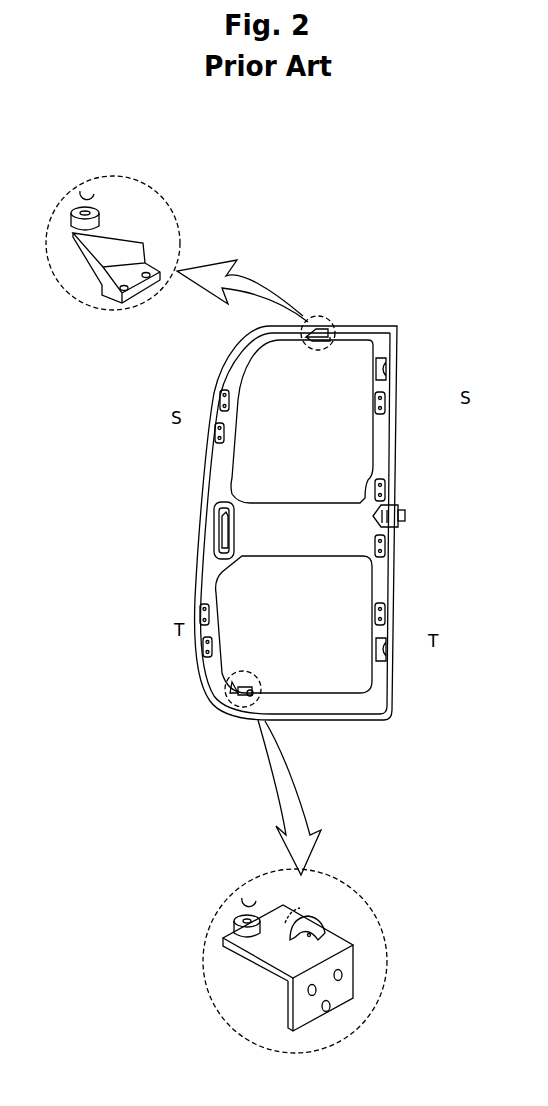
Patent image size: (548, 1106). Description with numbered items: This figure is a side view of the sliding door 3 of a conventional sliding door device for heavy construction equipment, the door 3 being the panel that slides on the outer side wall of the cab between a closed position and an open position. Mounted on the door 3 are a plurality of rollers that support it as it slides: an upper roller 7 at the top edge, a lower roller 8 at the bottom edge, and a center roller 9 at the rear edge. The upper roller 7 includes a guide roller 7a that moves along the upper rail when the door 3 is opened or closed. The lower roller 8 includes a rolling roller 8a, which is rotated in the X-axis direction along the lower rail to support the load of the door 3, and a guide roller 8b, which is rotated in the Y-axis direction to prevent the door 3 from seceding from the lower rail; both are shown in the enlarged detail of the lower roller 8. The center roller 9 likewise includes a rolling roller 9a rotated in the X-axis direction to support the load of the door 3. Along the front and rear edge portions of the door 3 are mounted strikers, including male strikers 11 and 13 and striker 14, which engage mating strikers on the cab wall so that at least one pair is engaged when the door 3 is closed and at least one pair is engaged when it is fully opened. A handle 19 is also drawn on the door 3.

The sliding door 3 is at (389, 320).
The upper roller 7 is at (154, 216).
The guide roller 7a is at (92, 210).
The lower roller 8 is at (229, 717).
The rolling roller 8a is at (302, 908).
The guide roller 8b is at (227, 915).
The center roller 9 is at (393, 513).
The rolling roller 9a is at (397, 505).
The male striker 11 is at (206, 426).
The male striker 13 is at (211, 393).
The striker 14 is at (379, 361).
The door handle 19 is at (206, 512).